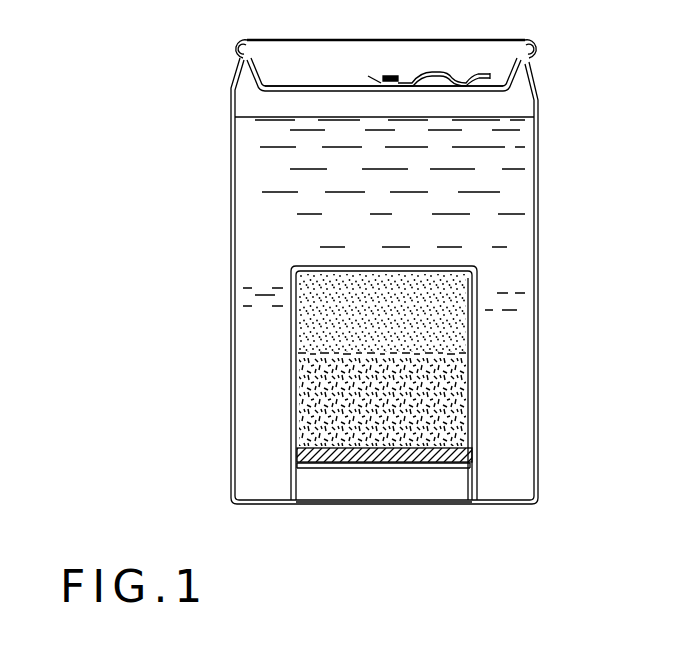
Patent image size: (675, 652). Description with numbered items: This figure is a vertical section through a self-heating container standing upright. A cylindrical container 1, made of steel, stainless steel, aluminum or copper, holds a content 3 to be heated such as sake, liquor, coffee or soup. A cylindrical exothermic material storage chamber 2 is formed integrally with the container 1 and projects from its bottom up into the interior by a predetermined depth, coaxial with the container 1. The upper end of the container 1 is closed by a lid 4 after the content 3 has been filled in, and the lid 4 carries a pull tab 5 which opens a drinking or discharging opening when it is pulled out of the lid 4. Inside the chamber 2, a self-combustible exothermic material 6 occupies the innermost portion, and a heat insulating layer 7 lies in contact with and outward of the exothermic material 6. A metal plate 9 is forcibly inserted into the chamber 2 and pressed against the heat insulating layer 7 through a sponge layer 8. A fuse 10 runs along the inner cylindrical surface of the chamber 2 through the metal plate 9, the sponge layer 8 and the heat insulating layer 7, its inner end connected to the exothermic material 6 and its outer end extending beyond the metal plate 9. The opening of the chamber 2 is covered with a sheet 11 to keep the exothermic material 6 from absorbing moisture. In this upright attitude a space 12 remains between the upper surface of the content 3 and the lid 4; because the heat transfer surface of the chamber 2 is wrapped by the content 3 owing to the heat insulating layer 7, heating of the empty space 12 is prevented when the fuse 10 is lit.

The cylindrical container 1 is at (542, 318).
The exothermic material storage chamber 2 is at (286, 264).
The content to be heated 3 is at (505, 205).
The lid 4 is at (330, 83).
The pull tab 5 is at (475, 73).
The self-combustible exothermic material 6 is at (305, 317).
The heat insulating layer 7 is at (298, 393).
The sponge layer 8 is at (342, 462).
The metal plate 9 is at (372, 468).
The fuse 10 is at (470, 482).
The sheet 11 is at (400, 504).
The space 12 is at (516, 103).